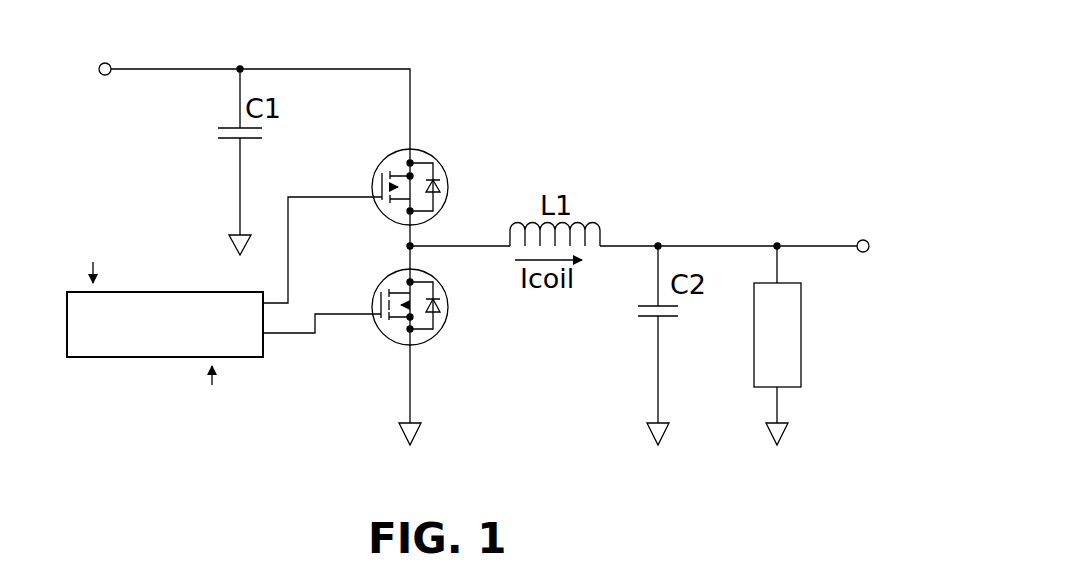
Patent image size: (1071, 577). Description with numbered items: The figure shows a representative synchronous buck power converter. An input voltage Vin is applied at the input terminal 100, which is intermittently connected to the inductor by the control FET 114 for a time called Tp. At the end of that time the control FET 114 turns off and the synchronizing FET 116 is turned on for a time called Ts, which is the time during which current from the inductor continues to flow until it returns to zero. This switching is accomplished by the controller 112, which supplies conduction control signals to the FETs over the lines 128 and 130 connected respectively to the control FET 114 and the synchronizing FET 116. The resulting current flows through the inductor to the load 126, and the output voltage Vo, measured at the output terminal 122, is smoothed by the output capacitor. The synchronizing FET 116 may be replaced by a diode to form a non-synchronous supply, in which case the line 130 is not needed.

The input terminal 100 is at (109, 63).
The controller 112 is at (149, 291).
The control FET 114 is at (430, 157).
The synchronizing FET 116 is at (433, 335).
The output terminal 122 is at (858, 240).
The load 126 is at (802, 312).
The line 128 is at (313, 195).
The line 130 is at (306, 335).